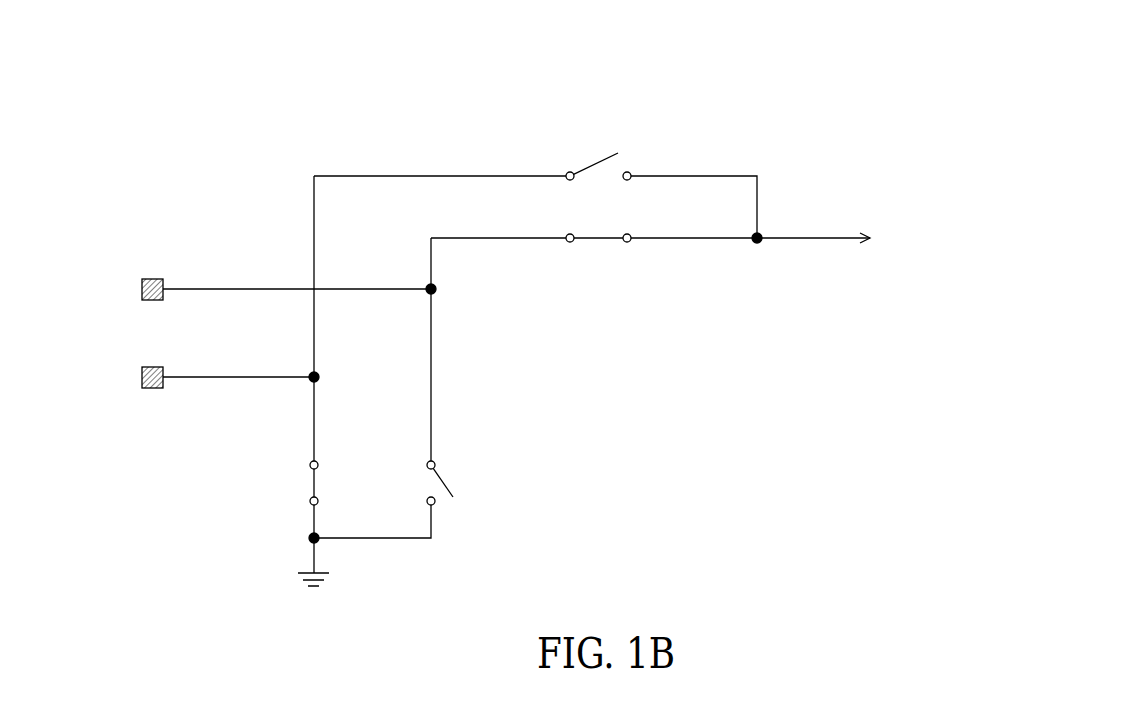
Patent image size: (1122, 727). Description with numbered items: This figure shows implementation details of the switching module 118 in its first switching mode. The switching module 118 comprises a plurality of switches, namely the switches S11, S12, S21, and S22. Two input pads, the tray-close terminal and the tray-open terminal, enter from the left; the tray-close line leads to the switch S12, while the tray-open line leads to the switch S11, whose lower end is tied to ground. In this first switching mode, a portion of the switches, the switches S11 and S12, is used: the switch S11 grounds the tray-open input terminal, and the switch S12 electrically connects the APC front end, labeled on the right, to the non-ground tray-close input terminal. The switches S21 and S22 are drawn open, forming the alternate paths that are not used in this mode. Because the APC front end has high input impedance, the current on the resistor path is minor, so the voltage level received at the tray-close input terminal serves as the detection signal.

The switching module 118 is at (960, 117).
The switch S11 is at (289, 483).
The switch S12 is at (598, 254).
The switch S21 is at (418, 483).
The switch S22 is at (598, 154).